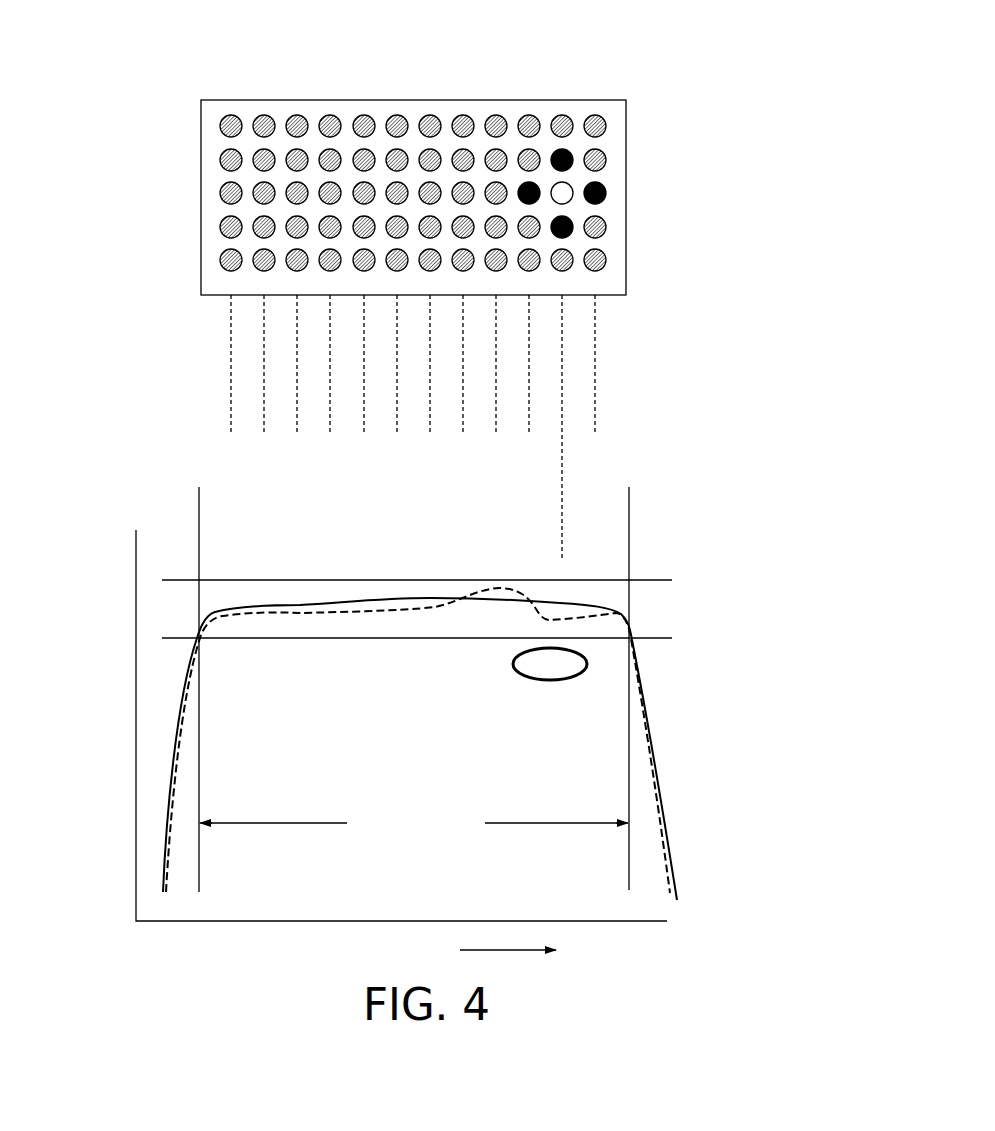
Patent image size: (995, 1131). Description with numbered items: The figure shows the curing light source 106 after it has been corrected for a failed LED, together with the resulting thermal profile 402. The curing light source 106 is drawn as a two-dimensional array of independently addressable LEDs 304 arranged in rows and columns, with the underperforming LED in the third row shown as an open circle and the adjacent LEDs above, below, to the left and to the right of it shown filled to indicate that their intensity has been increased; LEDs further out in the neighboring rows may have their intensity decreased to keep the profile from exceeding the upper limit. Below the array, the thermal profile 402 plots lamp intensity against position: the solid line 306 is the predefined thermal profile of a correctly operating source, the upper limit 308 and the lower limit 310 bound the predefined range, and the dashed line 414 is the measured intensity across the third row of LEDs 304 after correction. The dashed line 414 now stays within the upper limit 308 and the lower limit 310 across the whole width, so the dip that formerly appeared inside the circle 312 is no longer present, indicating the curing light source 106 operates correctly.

The curing light source 106 is at (557, 59).
The LEDs 304 is at (483, 158).
The thermal profile 402 is at (136, 547).
The solid line 306 is at (373, 594).
The dashed line 414 is at (505, 580).
The upper limit 308 is at (662, 577).
The lower limit 310 is at (662, 640).
The circle 312 is at (550, 688).